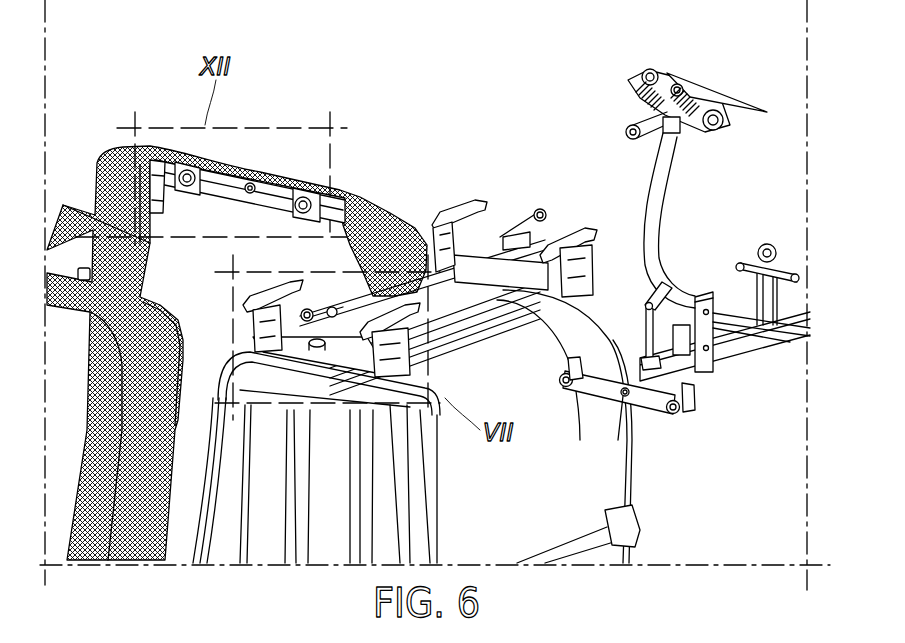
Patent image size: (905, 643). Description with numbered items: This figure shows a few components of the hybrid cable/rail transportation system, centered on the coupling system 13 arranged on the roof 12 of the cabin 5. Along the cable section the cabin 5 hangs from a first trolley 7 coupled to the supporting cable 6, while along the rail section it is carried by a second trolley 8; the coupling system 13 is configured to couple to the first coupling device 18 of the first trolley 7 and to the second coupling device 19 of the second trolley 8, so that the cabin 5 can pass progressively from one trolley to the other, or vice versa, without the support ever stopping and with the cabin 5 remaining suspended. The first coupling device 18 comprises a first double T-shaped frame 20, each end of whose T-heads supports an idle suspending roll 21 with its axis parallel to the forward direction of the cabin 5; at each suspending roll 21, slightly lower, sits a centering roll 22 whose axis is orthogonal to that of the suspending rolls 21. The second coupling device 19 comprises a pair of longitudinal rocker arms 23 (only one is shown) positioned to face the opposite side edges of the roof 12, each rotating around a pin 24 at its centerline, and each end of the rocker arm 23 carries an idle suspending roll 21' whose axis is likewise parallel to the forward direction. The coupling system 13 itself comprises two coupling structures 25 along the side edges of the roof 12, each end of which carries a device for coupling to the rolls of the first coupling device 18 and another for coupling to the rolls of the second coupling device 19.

The cabin 5 is at (632, 488).
The supporting cable 6 is at (745, 102).
The first trolley 7 is at (695, 197).
The second trolley 8 is at (172, 312).
The roof 12 is at (472, 300).
The coupling system 13 is at (448, 200).
The first coupling device 18 is at (750, 383).
The second coupling device 19 is at (252, 160).
The first double T-shaped frame 20 is at (800, 328).
The suspending roll 21 is at (678, 360).
The suspending roll 21' is at (259, 145).
The centering roll 22 is at (562, 393).
The rocker arm 23 is at (232, 178).
The pin 24 is at (272, 176).
The coupling structure 25 is at (568, 230).